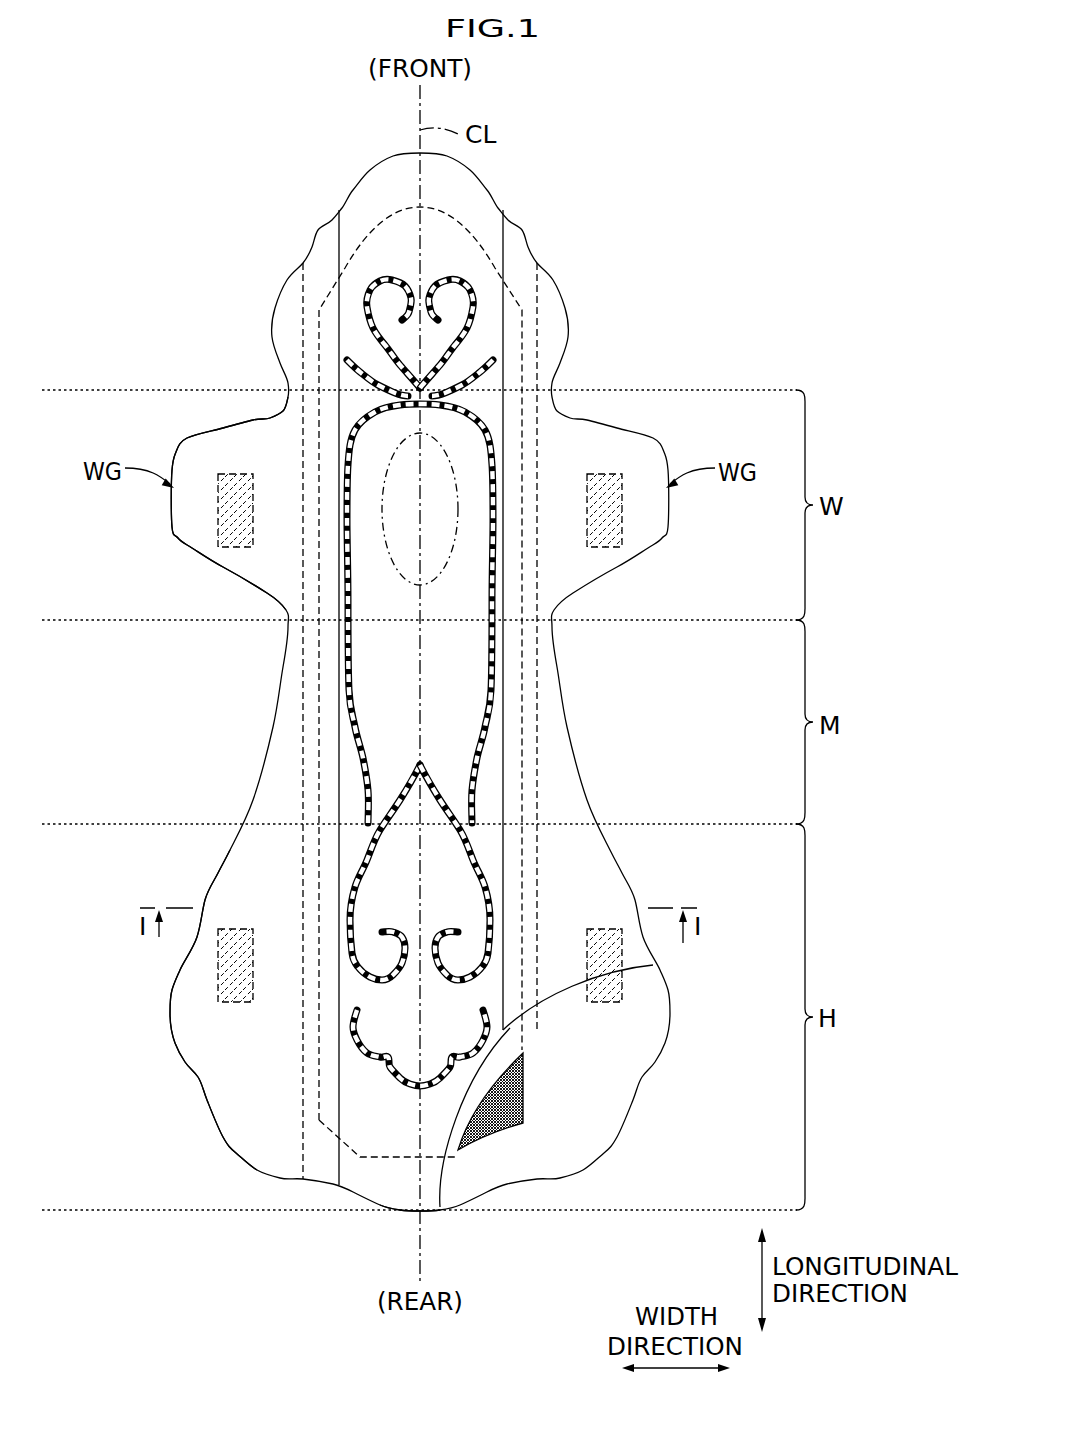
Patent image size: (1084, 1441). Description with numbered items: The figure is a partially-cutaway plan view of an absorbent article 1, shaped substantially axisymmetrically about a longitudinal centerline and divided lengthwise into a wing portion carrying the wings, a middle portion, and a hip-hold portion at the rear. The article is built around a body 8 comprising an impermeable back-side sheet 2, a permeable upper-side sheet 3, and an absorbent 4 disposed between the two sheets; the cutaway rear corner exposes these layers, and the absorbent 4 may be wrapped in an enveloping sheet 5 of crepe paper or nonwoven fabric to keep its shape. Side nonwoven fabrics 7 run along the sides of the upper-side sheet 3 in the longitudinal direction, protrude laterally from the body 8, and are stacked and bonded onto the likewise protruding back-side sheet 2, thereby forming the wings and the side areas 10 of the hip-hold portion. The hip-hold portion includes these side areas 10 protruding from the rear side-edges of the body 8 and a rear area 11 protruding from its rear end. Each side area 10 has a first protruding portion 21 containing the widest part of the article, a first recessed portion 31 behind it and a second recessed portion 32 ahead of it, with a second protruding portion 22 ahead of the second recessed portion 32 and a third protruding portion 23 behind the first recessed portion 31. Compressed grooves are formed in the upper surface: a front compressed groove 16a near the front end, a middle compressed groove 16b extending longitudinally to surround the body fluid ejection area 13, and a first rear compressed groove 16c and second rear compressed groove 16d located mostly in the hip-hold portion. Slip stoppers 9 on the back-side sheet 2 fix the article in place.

The absorbent article 1 is at (672, 176).
The back-side sheet 2 is at (621, 1039).
The upper-side sheet 3 is at (447, 1024).
The absorbent 4 is at (512, 1117).
The enveloping sheet 5 is at (522, 1050).
The side nonwoven fabrics 7 is at (558, 765).
The body 8 is at (440, 237).
The slip stoppers 9 is at (218, 523).
The side areas 10 is at (217, 1040).
The rear area 11 is at (390, 1167).
The body fluid ejection area 13 is at (412, 585).
The front compressed groove 16a is at (343, 273).
The middle compressed groove 16b is at (348, 667).
The first rear compressed groove 16c is at (356, 866).
The second rear compressed groove 16d is at (353, 1010).
The first protruding portion 21 is at (170, 1013).
The second protruding portion 22 is at (205, 898).
The third protruding portion 23 is at (233, 1150).
The first recessed portion 31 is at (198, 1080).
The second recessed portion 32 is at (198, 940).